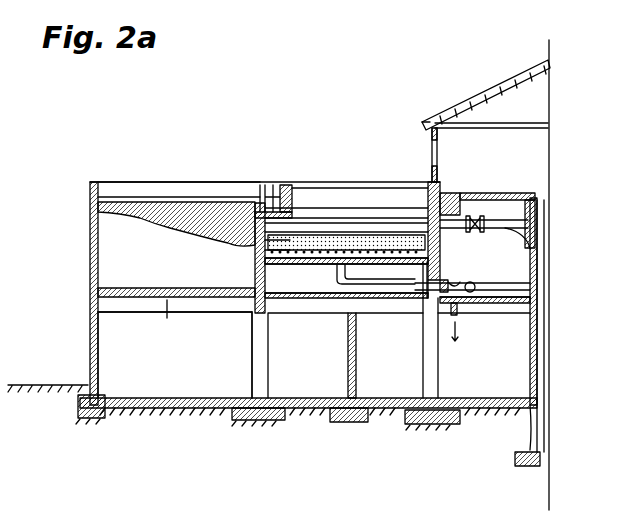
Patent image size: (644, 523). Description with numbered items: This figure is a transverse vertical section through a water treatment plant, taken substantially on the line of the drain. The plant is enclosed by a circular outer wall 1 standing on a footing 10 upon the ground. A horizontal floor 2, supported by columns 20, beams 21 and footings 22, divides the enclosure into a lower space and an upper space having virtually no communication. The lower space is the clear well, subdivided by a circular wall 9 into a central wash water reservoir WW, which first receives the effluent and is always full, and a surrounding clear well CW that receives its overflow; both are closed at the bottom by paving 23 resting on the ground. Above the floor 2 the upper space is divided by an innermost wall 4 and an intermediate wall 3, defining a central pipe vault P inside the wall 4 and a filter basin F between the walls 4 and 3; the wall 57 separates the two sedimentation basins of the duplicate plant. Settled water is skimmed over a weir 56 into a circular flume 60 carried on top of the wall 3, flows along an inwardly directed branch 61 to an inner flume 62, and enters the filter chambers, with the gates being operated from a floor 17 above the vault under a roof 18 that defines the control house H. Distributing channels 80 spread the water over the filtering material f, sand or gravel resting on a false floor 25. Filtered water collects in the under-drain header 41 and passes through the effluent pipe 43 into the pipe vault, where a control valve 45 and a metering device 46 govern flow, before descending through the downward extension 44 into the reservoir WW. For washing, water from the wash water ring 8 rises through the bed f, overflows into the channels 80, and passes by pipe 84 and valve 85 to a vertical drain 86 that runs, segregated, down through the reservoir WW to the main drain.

The outer wall 1 is at (92, 240).
The floor 2 is at (157, 292).
The intermediate wall 3 is at (258, 212).
The innermost wall 4 is at (432, 198).
The wash water ring 8 is at (472, 282).
The circular wall 9 is at (356, 370).
The footing 10 is at (88, 418).
The floor 17 is at (505, 200).
The roof 18 is at (498, 90).
The column 20 is at (262, 360).
The beam 21 is at (183, 313).
The footing 22 is at (268, 422).
The paving 23 is at (175, 396).
The false floor 25 is at (300, 285).
The header 41 is at (366, 245).
The effluent pipe 43 is at (372, 290).
The downward extension 44 is at (458, 312).
The control valve 45 is at (442, 286).
The metering device 46 is at (420, 300).
The weir 56 is at (158, 200).
The wall 57 is at (96, 216).
The flume 60 is at (276, 195).
The branch 61 is at (352, 198).
The inner flume 62 is at (448, 195).
The channel 80 is at (300, 240).
The pipe 84 is at (528, 235).
The valve 85 is at (470, 222).
The vertical drain 86 is at (538, 322).
The filter basin F is at (336, 185).
The control house H is at (536, 168).
The pipe vault P is at (487, 248).
The filtering material f is at (298, 252).
The clear well CW is at (175, 355).
The wash water reservoir WW is at (484, 339).